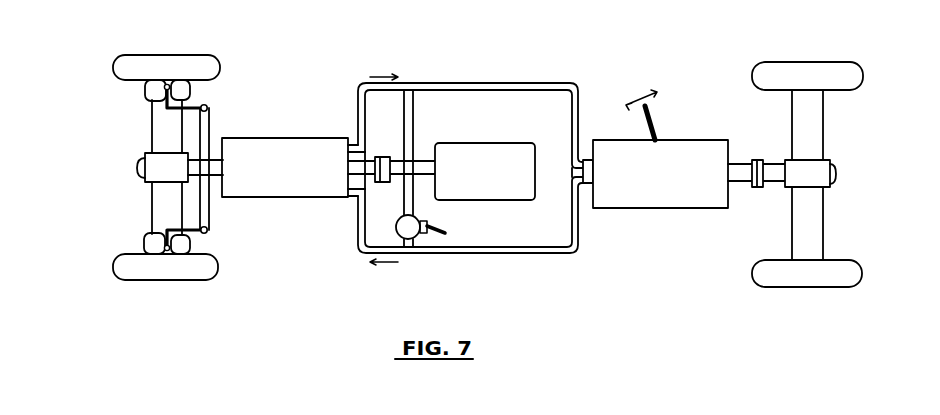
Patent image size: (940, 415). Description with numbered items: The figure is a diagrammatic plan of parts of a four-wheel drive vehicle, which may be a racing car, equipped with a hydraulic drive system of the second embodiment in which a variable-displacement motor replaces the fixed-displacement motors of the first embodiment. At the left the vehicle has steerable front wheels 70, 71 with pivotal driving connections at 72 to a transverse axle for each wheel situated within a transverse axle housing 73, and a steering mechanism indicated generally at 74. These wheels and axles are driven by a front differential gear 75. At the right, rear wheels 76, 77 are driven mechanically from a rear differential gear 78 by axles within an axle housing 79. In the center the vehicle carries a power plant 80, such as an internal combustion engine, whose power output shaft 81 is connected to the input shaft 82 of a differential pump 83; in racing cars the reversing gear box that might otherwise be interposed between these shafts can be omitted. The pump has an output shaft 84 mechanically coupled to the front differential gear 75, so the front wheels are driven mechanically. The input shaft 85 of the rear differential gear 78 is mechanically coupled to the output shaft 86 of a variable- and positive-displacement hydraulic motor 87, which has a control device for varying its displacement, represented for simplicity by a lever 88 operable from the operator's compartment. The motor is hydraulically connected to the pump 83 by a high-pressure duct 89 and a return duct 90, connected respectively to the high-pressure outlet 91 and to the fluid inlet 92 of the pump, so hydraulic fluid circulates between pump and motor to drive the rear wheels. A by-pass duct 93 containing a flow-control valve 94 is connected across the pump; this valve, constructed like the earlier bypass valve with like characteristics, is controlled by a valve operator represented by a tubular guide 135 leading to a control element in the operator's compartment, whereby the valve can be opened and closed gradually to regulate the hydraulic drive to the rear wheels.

The steerable front wheel 70 is at (177, 57).
The steerable front wheel 71 is at (180, 280).
The pivotal driving connection 72 is at (158, 99).
The transverse axle housing 73 is at (153, 203).
The steering mechanism 74 is at (207, 121).
The front differential gear 75 is at (144, 165).
The rear wheel 76 is at (812, 66).
The rear wheel 77 is at (808, 285).
The rear differential gear 78 is at (833, 163).
The axle housing 79 is at (818, 231).
The power plant 80 is at (512, 146).
The power output shaft 81 is at (421, 162).
The input shaft 82 is at (373, 158).
The differential pump 83 is at (276, 197).
The output shaft 84 is at (222, 197).
The input shaft 85 is at (782, 165).
The output shaft 86 is at (740, 183).
The variable- and positive-displacement hydraulic motor 87 is at (667, 209).
The lever 88 is at (655, 117).
The high-pressure duct 89 is at (461, 83).
The return duct 90 is at (532, 253).
The high-pressure outlet 91 is at (355, 141).
The fluid inlet 92 is at (354, 195).
The by-pass duct 93 is at (418, 109).
The flow-control valve 94 is at (398, 218).
The tubular guide 135 is at (430, 224).